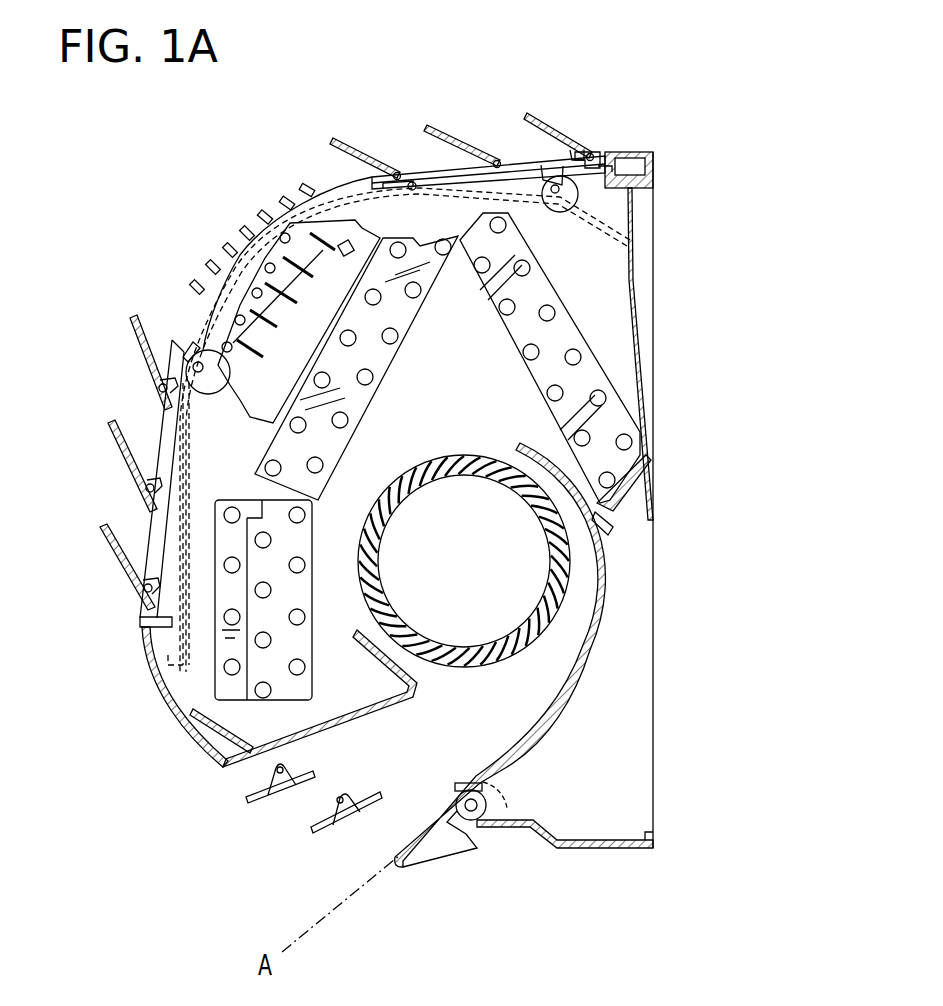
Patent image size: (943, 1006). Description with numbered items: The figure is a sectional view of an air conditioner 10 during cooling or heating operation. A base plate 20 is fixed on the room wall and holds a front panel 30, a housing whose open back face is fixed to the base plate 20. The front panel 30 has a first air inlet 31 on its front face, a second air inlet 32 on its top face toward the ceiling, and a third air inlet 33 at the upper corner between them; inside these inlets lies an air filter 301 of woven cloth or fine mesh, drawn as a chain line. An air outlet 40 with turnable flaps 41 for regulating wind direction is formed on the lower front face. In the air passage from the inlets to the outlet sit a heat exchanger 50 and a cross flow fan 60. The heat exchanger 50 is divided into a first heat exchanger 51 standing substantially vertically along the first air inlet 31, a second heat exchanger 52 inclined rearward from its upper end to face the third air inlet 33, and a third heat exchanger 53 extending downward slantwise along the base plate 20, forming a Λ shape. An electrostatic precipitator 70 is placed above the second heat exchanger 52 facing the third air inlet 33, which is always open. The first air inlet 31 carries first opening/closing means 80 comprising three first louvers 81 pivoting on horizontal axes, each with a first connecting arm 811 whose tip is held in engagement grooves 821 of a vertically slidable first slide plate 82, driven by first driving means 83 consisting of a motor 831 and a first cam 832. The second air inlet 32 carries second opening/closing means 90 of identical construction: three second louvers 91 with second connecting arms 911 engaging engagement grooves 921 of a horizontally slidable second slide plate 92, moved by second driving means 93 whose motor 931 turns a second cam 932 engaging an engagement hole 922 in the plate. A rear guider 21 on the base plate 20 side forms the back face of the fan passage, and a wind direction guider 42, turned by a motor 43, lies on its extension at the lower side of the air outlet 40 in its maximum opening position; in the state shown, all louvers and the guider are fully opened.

The air conditioner 10 is at (710, 110).
The base plate 20 is at (640, 280).
The rear guider 21 is at (606, 616).
The front panel 30 is at (182, 745).
The first air inlet 31 is at (140, 408).
The second air inlet 32 is at (428, 150).
The third air inlet 33 is at (212, 242).
The air outlet 40 is at (405, 766).
The flaps 41 is at (330, 822).
The wind direction guider 42 is at (440, 855).
The motor 43 is at (510, 803).
The heat exchanger 50 is at (582, 330).
The first heat exchanger 51 is at (304, 550).
The second heat exchanger 52 is at (400, 300).
The third heat exchanger 53 is at (622, 428).
The fan 60 is at (458, 498).
The electrostatic precipitator 70 is at (322, 218).
The first opening/closing means 80 is at (102, 583).
The first louvers 81 is at (136, 326).
The first slide plate 82 is at (185, 485).
The first driving means 83 is at (205, 350).
The second opening/closing means 90 is at (496, 92).
The second louvers 91 is at (433, 125).
The second slide plate 92 is at (378, 192).
The second driving means 93 is at (588, 198).
The air filter 301 is at (272, 210).
The first connecting arm 811 is at (158, 388).
The engagement grooves 821 is at (165, 378).
The motor 831 is at (203, 392).
The first cam 832 is at (186, 350).
The second connecting arm 911 is at (590, 154).
The engagement grooves 921 is at (612, 152).
The engagement hole 922 is at (576, 150).
The motor 931 is at (556, 208).
The second cam 932 is at (548, 176).